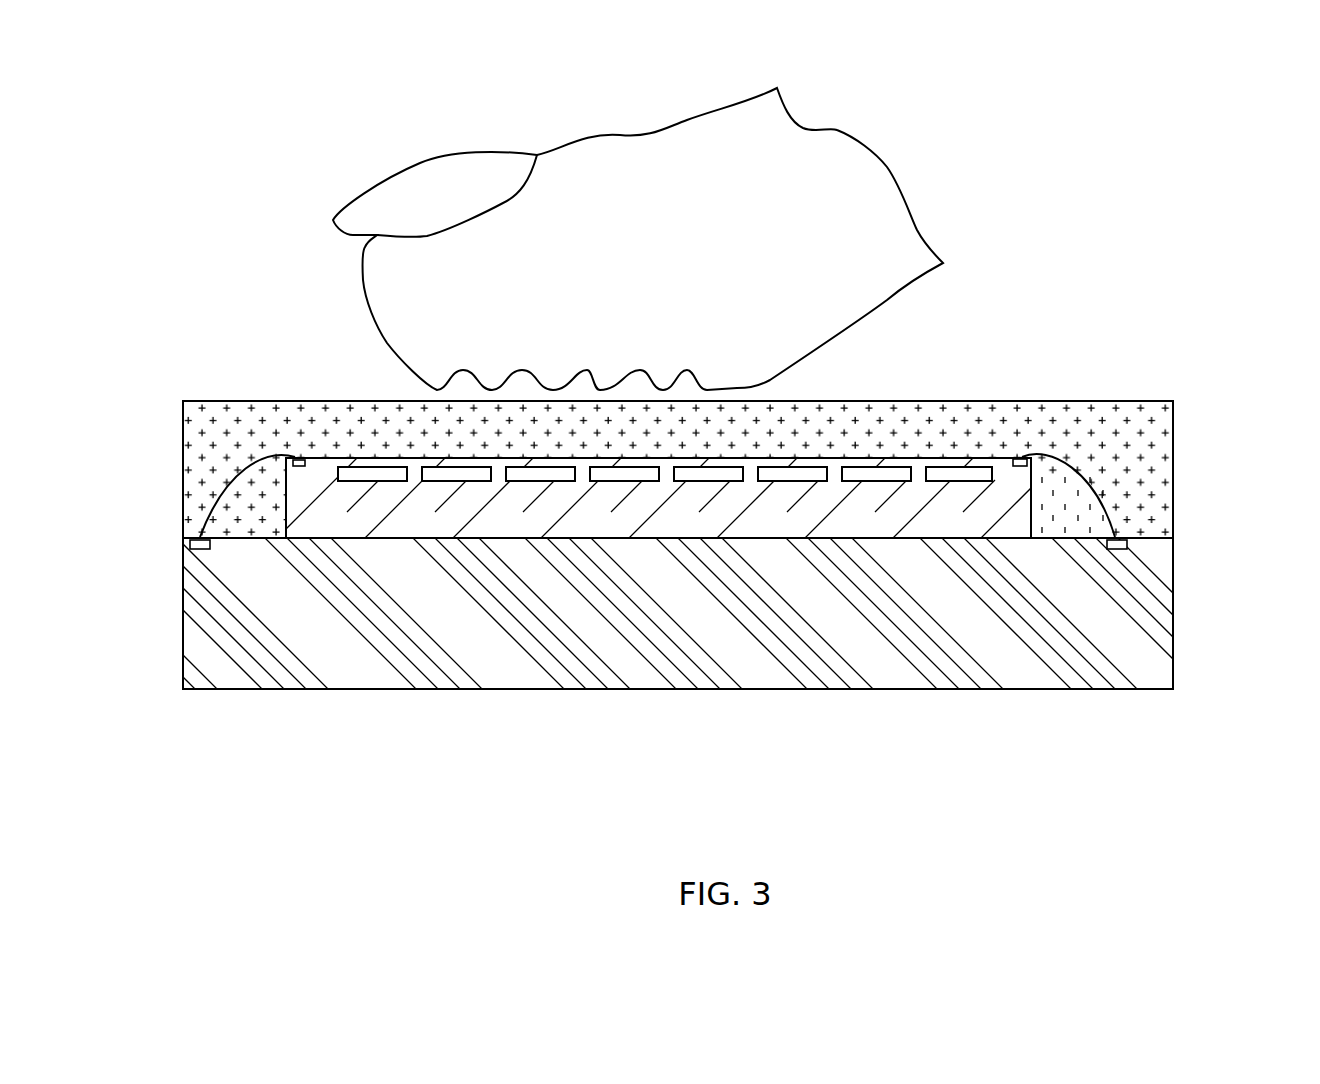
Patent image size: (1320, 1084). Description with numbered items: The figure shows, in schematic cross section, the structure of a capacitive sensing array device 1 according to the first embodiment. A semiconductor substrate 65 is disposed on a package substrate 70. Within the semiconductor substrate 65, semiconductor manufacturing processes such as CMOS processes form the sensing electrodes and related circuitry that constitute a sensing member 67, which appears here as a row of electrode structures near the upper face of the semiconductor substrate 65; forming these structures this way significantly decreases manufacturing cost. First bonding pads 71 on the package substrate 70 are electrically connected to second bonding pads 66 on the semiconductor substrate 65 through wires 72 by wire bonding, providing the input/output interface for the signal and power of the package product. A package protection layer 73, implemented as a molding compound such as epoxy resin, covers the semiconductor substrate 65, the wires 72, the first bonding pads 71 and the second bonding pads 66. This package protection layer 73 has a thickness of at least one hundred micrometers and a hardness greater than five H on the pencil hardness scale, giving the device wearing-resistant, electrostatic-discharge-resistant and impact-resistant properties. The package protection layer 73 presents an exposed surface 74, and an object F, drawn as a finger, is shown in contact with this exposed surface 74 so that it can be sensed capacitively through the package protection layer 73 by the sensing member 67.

The capacitive sensing array device 1 is at (1030, 320).
The object F is at (370, 276).
The semiconductor substrate 65 is at (402, 528).
The second bonding pads 66 is at (1011, 457).
The sensing member 67 is at (363, 474).
The package substrate 70 is at (1152, 622).
The first bonding pads 71 is at (1125, 545).
The wires 72 is at (1102, 448).
The package protection layer 73 is at (1152, 486).
The exposed surface 74 is at (207, 400).